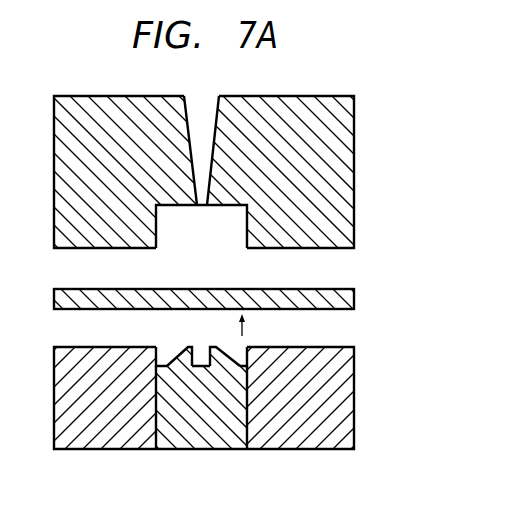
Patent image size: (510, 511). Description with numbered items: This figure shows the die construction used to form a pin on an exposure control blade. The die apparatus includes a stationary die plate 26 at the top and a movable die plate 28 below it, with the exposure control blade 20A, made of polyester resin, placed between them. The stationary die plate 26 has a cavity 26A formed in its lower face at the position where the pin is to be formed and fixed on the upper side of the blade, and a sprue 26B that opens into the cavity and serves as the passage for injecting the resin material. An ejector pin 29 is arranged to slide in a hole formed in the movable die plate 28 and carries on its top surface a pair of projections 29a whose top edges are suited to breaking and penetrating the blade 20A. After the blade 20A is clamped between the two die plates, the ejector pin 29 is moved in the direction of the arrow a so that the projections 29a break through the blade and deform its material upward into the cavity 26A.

The stationary die plate 26 is at (355, 140).
The sprue 26B is at (204, 104).
The cavity 26A is at (229, 249).
The exposure control blade 20A is at (355, 298).
The movable die plate 28 is at (356, 391).
The ejector pin 29 is at (227, 452).
The projections 29a is at (216, 349).
The arrow a is at (249, 326).